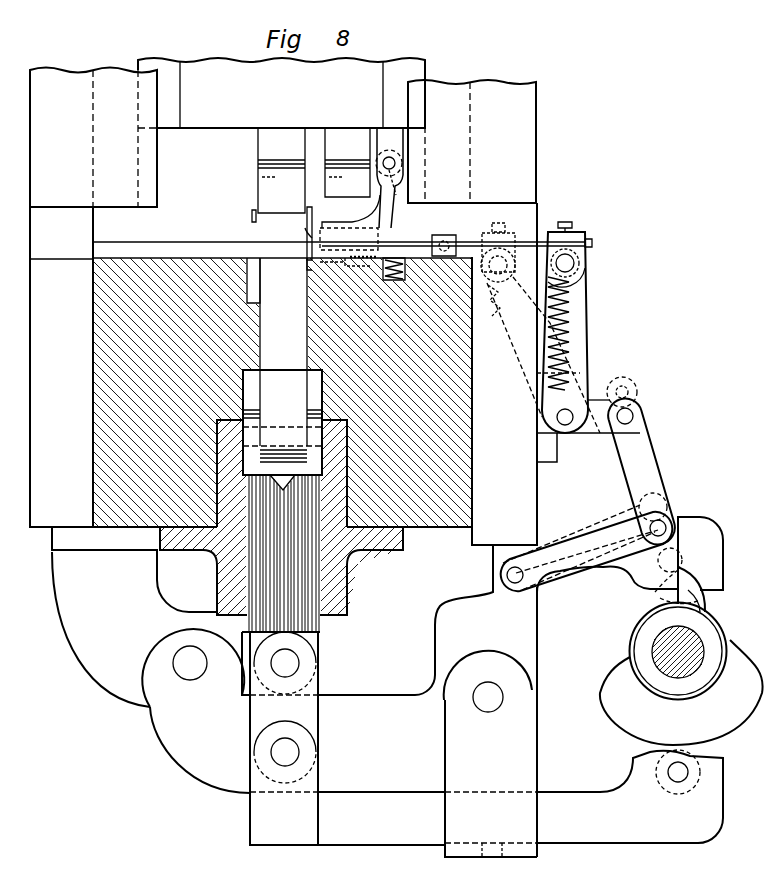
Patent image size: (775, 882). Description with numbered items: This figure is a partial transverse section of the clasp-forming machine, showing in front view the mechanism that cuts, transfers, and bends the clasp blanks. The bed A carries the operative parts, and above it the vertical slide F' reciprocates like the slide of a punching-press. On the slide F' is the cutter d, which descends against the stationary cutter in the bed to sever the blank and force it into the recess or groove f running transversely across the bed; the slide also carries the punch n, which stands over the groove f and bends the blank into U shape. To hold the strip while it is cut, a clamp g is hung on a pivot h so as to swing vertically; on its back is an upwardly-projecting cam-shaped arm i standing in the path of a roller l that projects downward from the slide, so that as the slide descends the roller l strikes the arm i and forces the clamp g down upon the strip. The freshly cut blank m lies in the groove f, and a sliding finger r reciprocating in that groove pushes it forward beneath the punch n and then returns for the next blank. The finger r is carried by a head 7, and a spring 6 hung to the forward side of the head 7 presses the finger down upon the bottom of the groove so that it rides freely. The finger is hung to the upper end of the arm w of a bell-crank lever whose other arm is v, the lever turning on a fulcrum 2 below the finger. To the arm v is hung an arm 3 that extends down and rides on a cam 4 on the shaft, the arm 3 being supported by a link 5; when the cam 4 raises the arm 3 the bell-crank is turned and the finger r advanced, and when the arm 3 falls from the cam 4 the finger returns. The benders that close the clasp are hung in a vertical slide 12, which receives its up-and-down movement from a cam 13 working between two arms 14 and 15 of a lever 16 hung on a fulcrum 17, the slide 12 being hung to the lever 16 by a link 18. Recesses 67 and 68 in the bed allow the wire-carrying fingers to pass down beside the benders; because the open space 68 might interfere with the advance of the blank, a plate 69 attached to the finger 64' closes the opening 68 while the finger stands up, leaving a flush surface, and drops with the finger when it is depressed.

The vertical slide F' is at (281, 93).
The bed of the machine A is at (339, 384).
The punch n is at (281, 171).
The cutter d is at (347, 162).
The roller l is at (389, 178).
The finger 64' is at (324, 231).
The cam-shaped arm i is at (351, 211).
The clamp g is at (380, 242).
The pivot h is at (444, 241).
The head 7 is at (581, 232).
The plate 69 is at (282, 224).
The recess 67 is at (254, 280).
The recess (open space) 68 is at (313, 271).
The recess (groove) f is at (332, 277).
The blank m is at (357, 268).
The sliding finger r is at (388, 282).
The plunger q is at (282, 366).
The spring 6 is at (565, 312).
The arm of bell-crank lever w is at (618, 325).
The arm of bell-crank lever v is at (612, 400).
The fulcrum 2 is at (565, 425).
The arm (cam-arm) 3 is at (641, 471).
The link 5 is at (587, 548).
The arm of lever 14 is at (690, 564).
The cam 4 is at (700, 599).
The vertical slide 12 is at (281, 526).
The fulcrum 17 is at (193, 668).
The link 18 is at (284, 712).
The lever 16 is at (376, 463).
The cam 13 is at (681, 674).
The arm of lever 15 is at (730, 770).